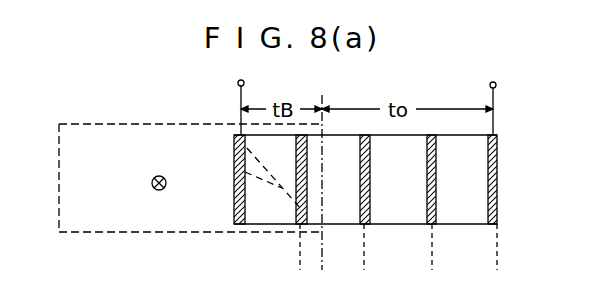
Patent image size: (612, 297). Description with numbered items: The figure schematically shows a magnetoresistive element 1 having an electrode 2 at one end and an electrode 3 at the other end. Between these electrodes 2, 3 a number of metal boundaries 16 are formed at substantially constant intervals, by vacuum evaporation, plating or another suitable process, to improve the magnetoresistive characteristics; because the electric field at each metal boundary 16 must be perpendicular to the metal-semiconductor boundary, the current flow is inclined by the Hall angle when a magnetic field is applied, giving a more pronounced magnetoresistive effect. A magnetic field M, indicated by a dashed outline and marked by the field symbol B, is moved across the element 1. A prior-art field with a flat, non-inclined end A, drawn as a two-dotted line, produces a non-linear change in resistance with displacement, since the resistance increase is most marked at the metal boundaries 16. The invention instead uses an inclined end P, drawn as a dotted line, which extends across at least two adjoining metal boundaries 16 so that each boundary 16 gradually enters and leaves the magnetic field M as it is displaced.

The magnetoresistive element 1 is at (270, 212).
The electrode 2 is at (234, 195).
The electrode 3 is at (497, 205).
The metal boundaries 16 is at (305, 203).
The magnetic field M is at (128, 137).
The magnetic field B is at (150, 185).
The inclined end of magnetic field P is at (236, 173).
The flat end of magnetic field A is at (323, 185).